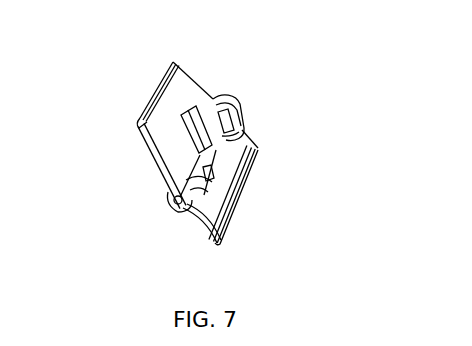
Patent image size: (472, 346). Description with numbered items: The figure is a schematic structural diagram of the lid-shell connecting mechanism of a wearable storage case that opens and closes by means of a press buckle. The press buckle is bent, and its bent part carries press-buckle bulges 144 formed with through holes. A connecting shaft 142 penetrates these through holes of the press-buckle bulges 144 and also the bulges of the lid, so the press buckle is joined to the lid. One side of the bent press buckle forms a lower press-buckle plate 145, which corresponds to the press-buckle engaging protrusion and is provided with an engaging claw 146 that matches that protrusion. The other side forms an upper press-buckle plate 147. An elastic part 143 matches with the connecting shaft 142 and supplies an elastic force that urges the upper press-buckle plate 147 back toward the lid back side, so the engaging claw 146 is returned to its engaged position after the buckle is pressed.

The connecting shaft 142 is at (223, 223).
The elastic part 143 is at (185, 135).
The press-buckle bulges 144 is at (172, 201).
The lower press-buckle plate 145 is at (235, 152).
The engaging claw 146 is at (233, 196).
The upper press-buckle plate 147 is at (183, 92).